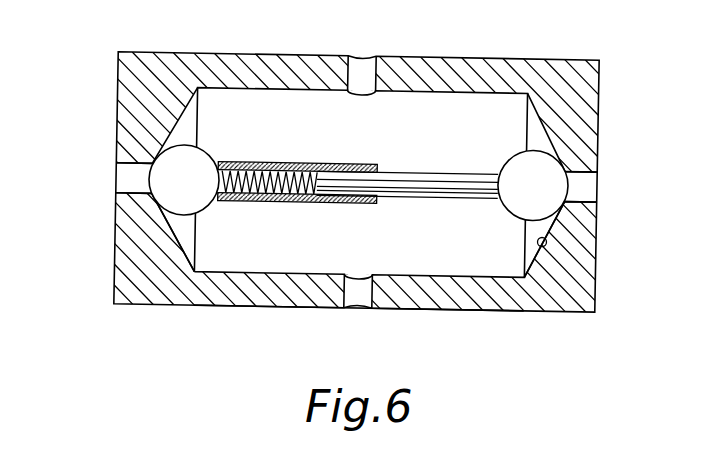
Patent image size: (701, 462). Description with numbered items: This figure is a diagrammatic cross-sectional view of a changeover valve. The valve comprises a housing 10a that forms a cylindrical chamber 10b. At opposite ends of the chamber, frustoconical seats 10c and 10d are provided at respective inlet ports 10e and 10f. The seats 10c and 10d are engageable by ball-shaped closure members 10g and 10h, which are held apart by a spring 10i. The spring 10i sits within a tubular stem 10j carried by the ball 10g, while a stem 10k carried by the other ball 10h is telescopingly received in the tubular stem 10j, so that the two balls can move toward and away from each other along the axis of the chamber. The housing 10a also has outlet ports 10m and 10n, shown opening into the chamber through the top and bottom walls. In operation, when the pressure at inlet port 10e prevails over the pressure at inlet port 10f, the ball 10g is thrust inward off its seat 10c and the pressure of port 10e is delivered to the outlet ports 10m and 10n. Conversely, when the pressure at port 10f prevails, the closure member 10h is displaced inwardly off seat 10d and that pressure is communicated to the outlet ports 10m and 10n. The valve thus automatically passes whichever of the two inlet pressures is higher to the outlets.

The housing 10a is at (573, 57).
The cylindrical chamber 10b is at (281, 273).
The frustoconical seat 10c is at (174, 237).
The frustoconical seat 10d is at (548, 246).
The inlet port 10e is at (123, 173).
The inlet port 10f is at (583, 187).
The ball-shaped closure member 10g is at (207, 215).
The ball-shaped closure member 10h is at (510, 202).
The spring 10i is at (267, 203).
The tubular stem 10j is at (272, 162).
The stem 10k is at (443, 173).
The outlet port 10m is at (368, 58).
The outlet port 10n is at (362, 296).